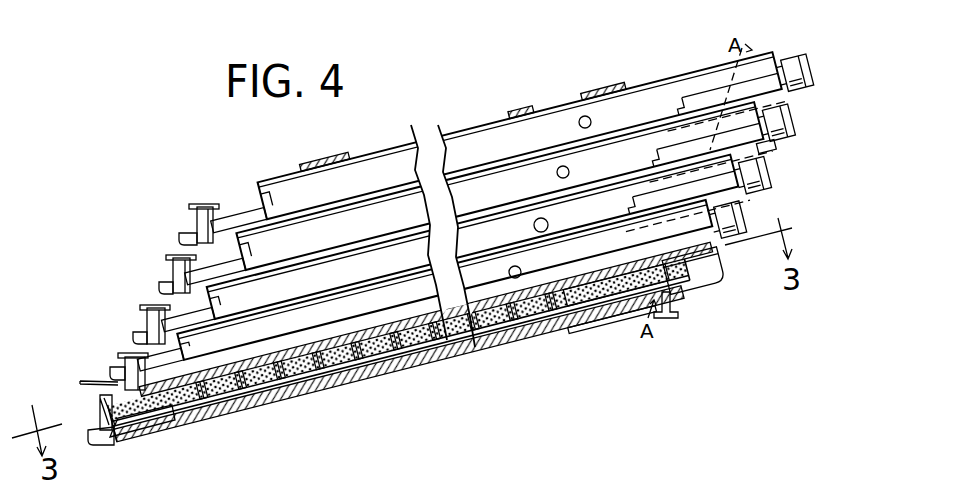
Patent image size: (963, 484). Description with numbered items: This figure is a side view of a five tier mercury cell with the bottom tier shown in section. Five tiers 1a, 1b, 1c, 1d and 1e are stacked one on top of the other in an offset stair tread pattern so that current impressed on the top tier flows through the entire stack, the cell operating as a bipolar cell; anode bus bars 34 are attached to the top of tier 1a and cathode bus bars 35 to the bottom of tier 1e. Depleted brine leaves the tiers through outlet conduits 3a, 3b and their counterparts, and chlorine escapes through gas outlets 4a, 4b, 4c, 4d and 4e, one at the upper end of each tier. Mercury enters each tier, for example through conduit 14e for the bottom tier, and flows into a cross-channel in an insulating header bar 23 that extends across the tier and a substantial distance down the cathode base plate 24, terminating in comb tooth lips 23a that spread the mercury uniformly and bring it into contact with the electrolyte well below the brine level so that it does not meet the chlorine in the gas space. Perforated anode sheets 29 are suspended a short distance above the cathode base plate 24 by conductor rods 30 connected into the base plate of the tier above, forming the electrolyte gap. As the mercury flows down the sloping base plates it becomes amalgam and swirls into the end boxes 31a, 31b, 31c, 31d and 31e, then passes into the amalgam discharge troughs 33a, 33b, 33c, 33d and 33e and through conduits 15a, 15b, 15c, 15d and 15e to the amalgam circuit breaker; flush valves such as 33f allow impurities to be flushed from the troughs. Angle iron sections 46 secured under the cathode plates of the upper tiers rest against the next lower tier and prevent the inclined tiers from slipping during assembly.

The top tier 1a is at (407, 165).
The second tier 1b is at (420, 216).
The third tier 1c is at (422, 255).
The fourth tier 1d is at (425, 295).
The bottom tier 1e is at (438, 350).
The depleted brine outlet conduit 3a is at (591, 122).
The depleted brine outlet conduit 3b is at (569, 172).
The gas outlet 4a is at (815, 28).
The gas outlet 4b is at (787, 113).
The gas outlet 4c is at (775, 174).
The gas outlet 4d is at (748, 212).
The gas outlet 4e is at (722, 264).
The mercury inlet conduit 14e is at (665, 316).
The amalgam conduit 15a is at (182, 236).
The amalgam conduit 15b is at (160, 290).
The amalgam conduit 15c is at (135, 328).
The amalgam conduit 15d is at (112, 366).
The amalgam conduit 15e is at (96, 446).
The header bar 23 is at (685, 100).
The comb tooth lips 23a is at (600, 312).
The cathode base plate 24 is at (362, 335).
The anode sheet 29 is at (212, 393).
The conductor rod 30 is at (527, 296).
The end box 31a is at (246, 213).
The end box 31b is at (243, 267).
The end box 31c is at (212, 315).
The end box 31d is at (195, 360).
The end box 31e is at (152, 428).
The amalgam discharge trough 33a is at (191, 208).
The amalgam discharge trough 33b is at (172, 266).
The amalgam discharge trough 33c is at (150, 312).
The amalgam discharge trough 33d is at (126, 360).
The amalgam discharge trough 33e is at (98, 413).
The flush valve 33f is at (80, 383).
The anode bus bar 34 is at (342, 158).
The cathode bus bar 35 is at (272, 408).
The angle iron section 46 is at (762, 153).